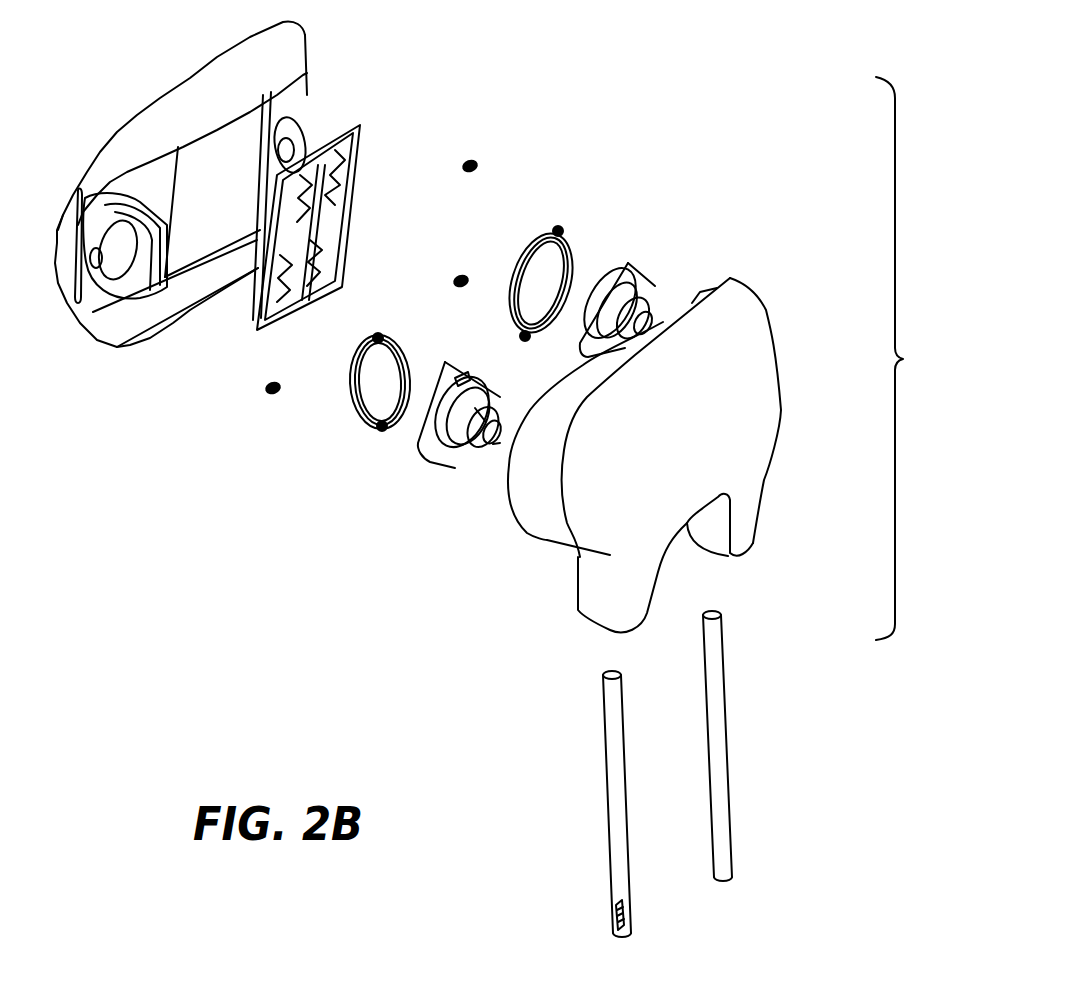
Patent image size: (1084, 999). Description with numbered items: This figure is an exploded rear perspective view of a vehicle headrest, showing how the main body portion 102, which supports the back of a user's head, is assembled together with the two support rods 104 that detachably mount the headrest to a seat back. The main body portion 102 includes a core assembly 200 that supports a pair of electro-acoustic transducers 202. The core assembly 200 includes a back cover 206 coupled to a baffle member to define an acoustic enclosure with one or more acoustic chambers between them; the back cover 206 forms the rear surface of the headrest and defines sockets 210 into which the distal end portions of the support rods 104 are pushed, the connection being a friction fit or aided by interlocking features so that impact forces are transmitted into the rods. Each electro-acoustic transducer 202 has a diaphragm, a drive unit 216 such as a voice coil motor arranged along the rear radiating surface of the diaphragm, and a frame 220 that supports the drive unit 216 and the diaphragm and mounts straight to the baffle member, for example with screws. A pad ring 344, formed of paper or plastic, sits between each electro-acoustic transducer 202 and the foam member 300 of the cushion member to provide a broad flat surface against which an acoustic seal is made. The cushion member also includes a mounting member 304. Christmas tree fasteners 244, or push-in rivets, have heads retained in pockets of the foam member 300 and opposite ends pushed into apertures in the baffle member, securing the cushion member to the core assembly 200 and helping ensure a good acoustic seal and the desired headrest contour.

The main body portion 102 is at (914, 358).
The support rods 104 is at (723, 803).
The core assembly 200 is at (654, 476).
The electro-acoustic transducers 202 is at (527, 367).
The back cover 206 is at (765, 415).
The sockets 210 is at (590, 603).
The drive unit 216 is at (475, 437).
The frame 220 is at (437, 462).
The Christmas tree fasteners 244 is at (470, 160).
The foam member 300 is at (110, 123).
The mounting member 304 is at (357, 221).
The pad ring 344 is at (513, 317).